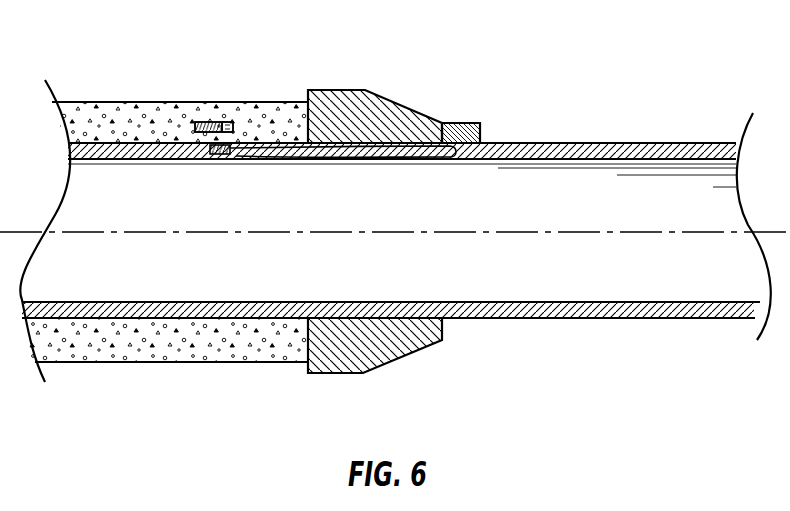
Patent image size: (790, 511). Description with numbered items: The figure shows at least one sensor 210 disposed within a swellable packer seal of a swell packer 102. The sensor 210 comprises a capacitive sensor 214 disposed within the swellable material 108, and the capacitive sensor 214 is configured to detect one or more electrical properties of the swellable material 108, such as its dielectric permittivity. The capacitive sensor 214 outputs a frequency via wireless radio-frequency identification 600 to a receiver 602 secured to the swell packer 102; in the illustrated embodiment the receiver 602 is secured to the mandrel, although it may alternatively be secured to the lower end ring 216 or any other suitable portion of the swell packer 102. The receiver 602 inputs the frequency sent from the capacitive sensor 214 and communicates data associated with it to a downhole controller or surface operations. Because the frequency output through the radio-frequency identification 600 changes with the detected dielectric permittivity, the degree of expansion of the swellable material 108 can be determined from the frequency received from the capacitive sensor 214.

The swell packer 102 is at (560, 83).
The swellable material 108 is at (120, 104).
The sensor 210 is at (196, 122).
The capacitive sensor 214 is at (212, 121).
The lower end ring 216 is at (400, 107).
The wireless radio-frequency identification 600 is at (236, 126).
The receiver 602 is at (217, 156).